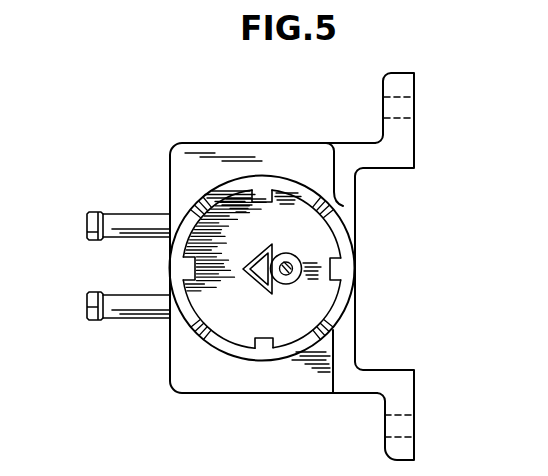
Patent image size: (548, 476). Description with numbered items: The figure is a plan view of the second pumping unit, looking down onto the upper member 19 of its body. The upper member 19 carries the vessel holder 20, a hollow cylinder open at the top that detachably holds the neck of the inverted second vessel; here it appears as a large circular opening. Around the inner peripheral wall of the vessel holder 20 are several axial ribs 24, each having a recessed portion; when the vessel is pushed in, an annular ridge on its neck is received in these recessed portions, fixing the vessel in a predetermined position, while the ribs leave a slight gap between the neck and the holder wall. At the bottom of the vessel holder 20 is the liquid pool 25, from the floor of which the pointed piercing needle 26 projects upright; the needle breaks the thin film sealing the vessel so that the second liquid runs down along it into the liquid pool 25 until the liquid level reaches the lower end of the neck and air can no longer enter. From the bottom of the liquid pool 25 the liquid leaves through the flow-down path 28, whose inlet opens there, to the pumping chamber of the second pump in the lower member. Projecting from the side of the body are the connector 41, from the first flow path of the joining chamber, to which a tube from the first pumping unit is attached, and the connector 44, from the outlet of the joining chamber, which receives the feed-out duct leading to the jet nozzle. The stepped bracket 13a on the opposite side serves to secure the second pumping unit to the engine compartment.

The bracket 13a is at (404, 149).
The upper member 19 is at (198, 367).
The vessel holder 20 is at (229, 192).
The axial ribs 24 is at (265, 188).
The liquid pool 25 is at (343, 234).
The piercing needle 26 is at (258, 254).
The flow-down path 28 is at (287, 282).
The connector 41 is at (87, 232).
The connector 44 is at (130, 315).